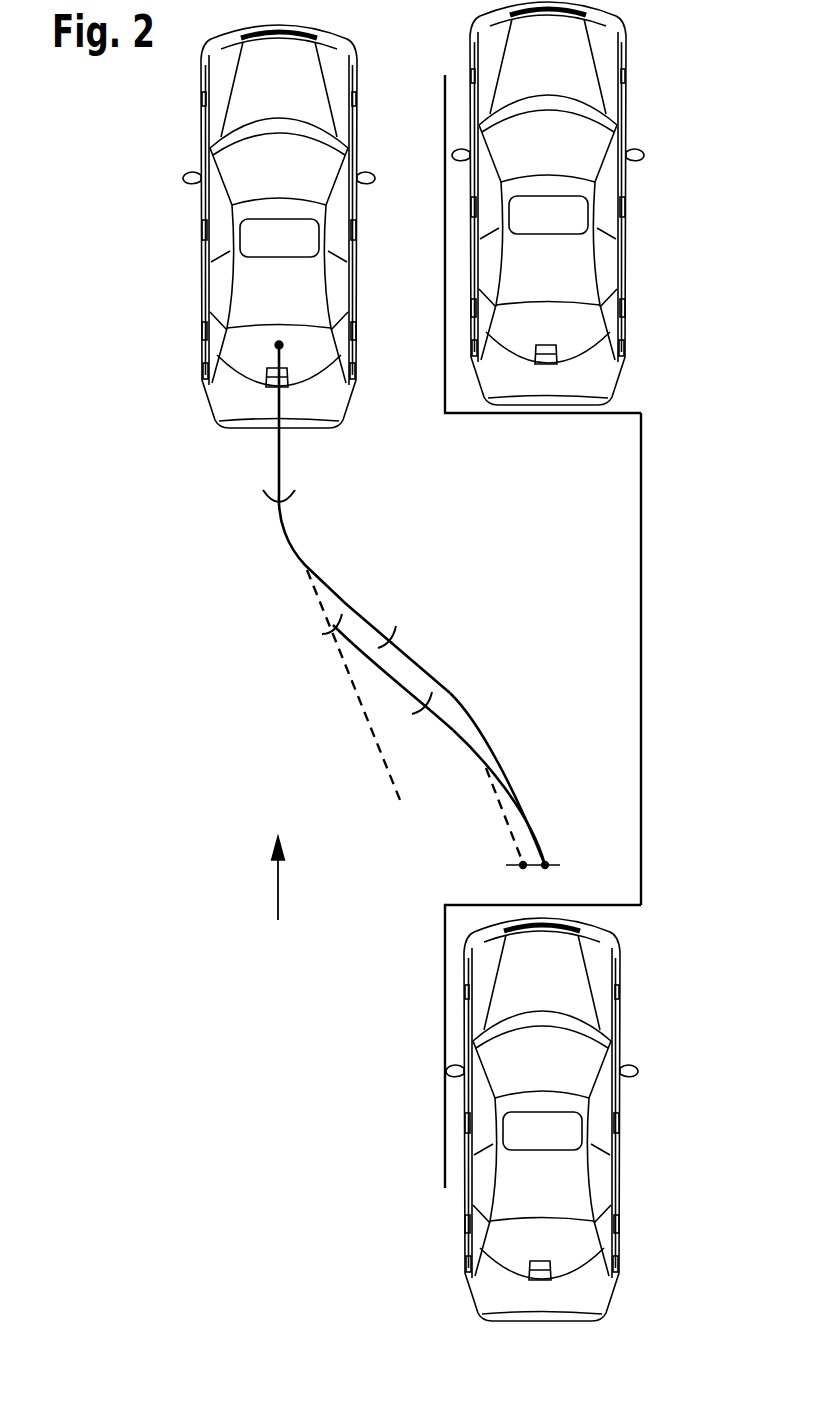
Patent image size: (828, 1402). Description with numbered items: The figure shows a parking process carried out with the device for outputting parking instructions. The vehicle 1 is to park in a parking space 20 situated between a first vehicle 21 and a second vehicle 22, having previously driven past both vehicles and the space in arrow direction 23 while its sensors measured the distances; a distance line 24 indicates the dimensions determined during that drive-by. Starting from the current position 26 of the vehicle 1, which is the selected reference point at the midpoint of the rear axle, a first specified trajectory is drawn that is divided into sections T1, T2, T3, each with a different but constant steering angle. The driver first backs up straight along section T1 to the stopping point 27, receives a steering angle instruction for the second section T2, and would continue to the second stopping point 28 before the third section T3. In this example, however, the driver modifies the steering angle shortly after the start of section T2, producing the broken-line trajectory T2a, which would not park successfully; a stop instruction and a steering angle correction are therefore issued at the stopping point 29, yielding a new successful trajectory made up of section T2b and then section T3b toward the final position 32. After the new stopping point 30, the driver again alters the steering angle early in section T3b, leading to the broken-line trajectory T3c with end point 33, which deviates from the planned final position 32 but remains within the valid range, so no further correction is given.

The vehicle 1 is at (253, 290).
The parking space 20 is at (615, 593).
The first vehicle 21 is at (562, 1185).
The second vehicle 22 is at (557, 272).
The arrow direction 23 is at (279, 887).
The distance line 24 is at (641, 775).
The current position 26 is at (275, 347).
The stopping point 27 is at (303, 493).
The second stopping point 28 is at (392, 637).
The stopping point 29 is at (323, 627).
The new stopping point 30 is at (427, 700).
The final position 32 is at (548, 865).
The end point 33 is at (520, 864).
The first section T1 is at (279, 457).
The second section T2 is at (327, 585).
The trajectory T2a is at (373, 735).
The section T2b is at (387, 680).
The third section T3 is at (487, 743).
The section T3b is at (453, 730).
The trajectory T3c is at (507, 815).